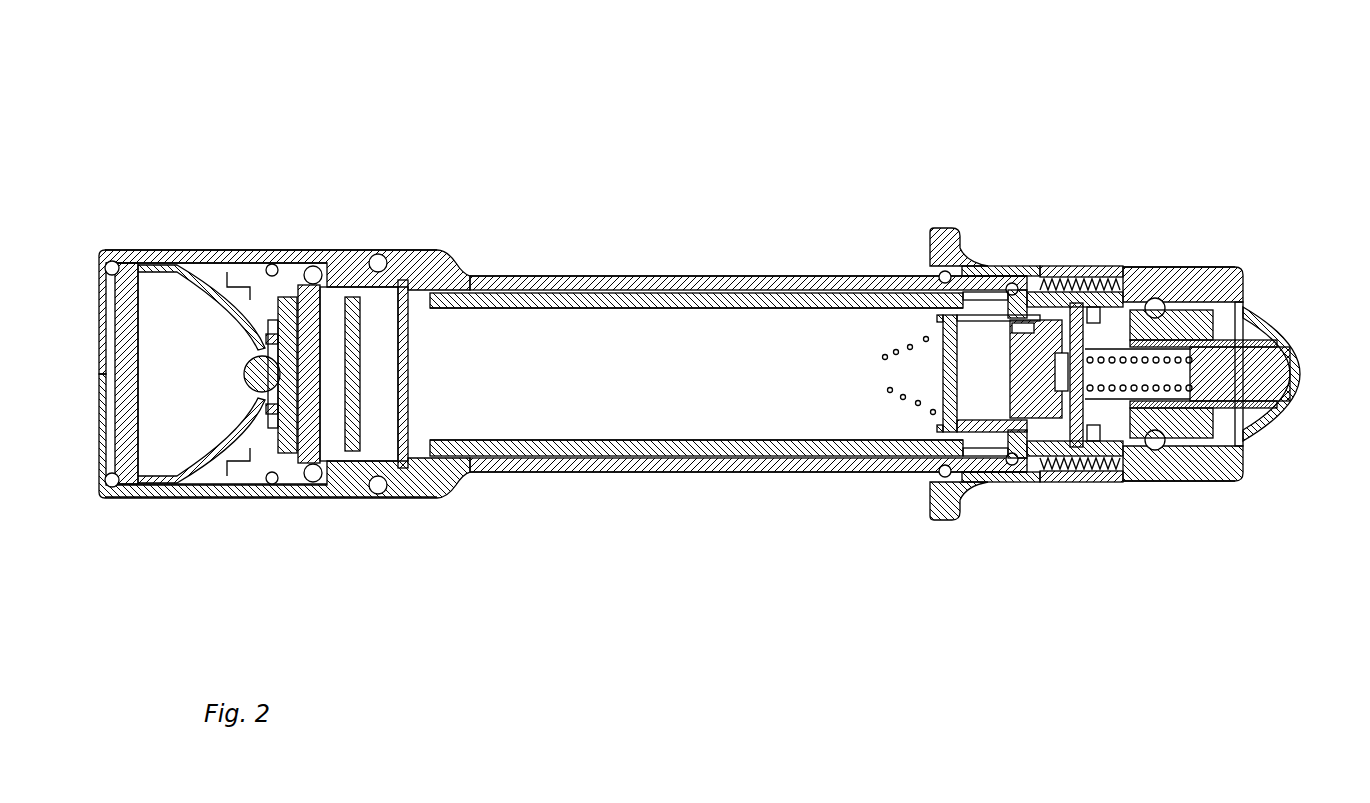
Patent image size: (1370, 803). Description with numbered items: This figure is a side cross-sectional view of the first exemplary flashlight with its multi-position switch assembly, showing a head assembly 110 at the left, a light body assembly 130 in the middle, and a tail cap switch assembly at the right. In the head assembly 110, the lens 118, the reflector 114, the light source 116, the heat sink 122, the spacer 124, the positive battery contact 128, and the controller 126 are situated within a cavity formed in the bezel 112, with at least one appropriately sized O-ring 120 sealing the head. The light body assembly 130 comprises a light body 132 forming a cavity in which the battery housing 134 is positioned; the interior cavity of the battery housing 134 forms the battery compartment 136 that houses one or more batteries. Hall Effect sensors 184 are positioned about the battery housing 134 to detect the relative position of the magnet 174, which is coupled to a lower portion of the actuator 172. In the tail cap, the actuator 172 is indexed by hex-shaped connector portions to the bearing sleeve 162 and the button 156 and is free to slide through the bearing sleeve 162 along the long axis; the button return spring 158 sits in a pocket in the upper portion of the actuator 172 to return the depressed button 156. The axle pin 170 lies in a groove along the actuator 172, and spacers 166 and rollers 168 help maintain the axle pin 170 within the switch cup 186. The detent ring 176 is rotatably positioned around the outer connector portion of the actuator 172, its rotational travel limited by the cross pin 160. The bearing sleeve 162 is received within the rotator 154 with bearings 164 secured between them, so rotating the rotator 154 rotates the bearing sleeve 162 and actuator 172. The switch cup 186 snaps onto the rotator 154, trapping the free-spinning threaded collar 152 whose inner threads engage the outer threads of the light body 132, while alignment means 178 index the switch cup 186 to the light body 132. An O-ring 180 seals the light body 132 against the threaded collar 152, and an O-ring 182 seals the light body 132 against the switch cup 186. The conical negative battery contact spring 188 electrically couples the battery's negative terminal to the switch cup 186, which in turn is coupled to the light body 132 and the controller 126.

The head assembly 110 is at (252, 128).
The bezel 112 is at (255, 500).
The reflector 114 is at (237, 262).
The light source 116 is at (240, 373).
The lens 118 is at (138, 262).
The O-ring 120 is at (108, 250).
The heat sink 122 is at (300, 480).
The spacer 124 is at (205, 492).
The controller 126 is at (360, 318).
The positive battery contact 128 is at (395, 415).
The light body assembly 130 is at (582, 128).
The light body 132 is at (620, 278).
The battery housing 134 is at (650, 445).
The battery compartment 136 is at (585, 380).
The threaded collar 152 is at (1055, 255).
The rotator 154 is at (1217, 270).
The button 156 is at (1295, 370).
The button return spring 158 is at (1250, 440).
The cross pin 160 is at (1195, 375).
The bearing sleeve 162 is at (1195, 317).
The bearings 164 is at (1165, 440).
The spacers 166 is at (1140, 470).
The rollers 168 is at (1115, 483).
The axle pin 170 is at (1098, 483).
The actuator 172 is at (1150, 272).
The magnet 174 is at (1060, 268).
The detent ring 176 is at (1080, 268).
The alignment means 178 is at (1003, 483).
The O-ring 180 is at (930, 490).
The O-ring 182 is at (1013, 268).
The Hall Effect sensors 184 is at (977, 268).
The switch cup 186 is at (935, 322).
The conical negative battery contact spring 188 is at (905, 385).